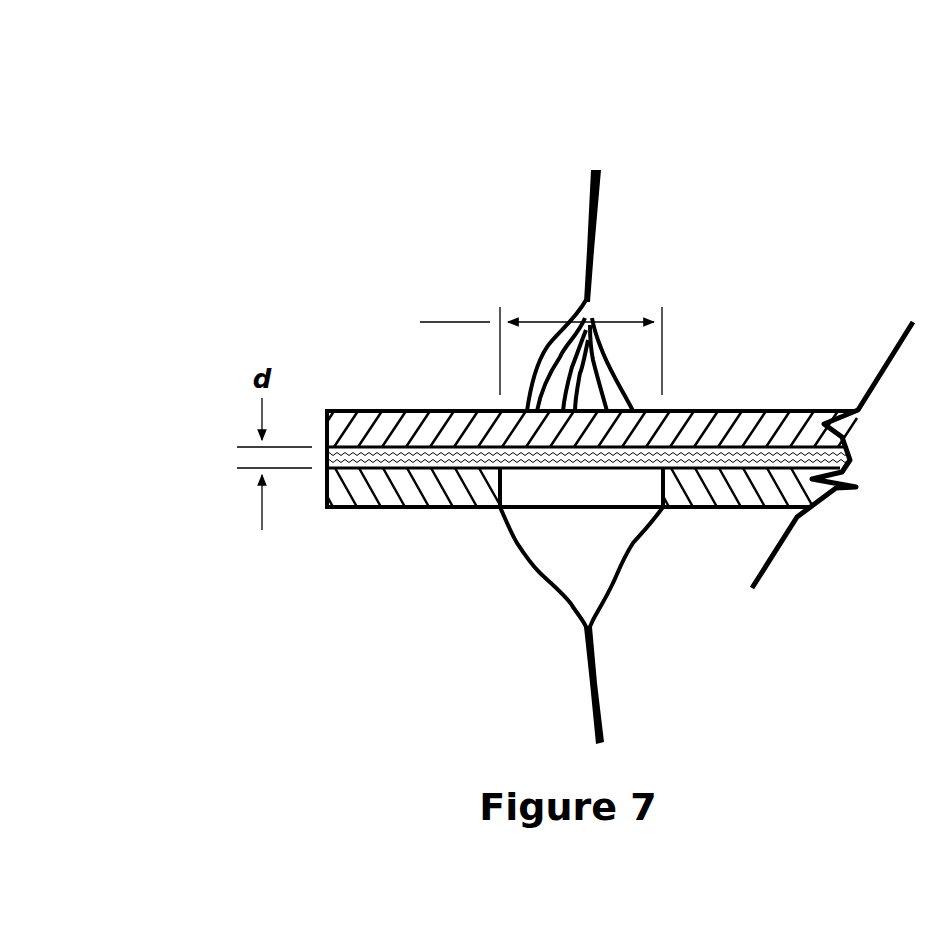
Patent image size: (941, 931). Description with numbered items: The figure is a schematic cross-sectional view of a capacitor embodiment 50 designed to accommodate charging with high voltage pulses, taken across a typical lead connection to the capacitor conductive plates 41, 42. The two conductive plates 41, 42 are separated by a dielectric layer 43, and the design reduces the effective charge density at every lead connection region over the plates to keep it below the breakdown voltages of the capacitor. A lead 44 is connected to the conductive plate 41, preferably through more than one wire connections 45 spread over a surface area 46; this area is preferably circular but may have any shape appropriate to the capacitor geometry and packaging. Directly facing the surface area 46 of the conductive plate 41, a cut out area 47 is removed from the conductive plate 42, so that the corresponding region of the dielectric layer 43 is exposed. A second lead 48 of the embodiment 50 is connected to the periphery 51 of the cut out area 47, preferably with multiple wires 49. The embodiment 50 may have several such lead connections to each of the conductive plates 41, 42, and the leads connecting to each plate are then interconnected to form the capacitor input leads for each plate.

The capacitor embodiment 50 is at (181, 164).
The lead 44 is at (571, 204).
The wire connections 45 is at (632, 370).
The surface area 46 is at (541, 338).
The dielectric layer 43 is at (762, 455).
The conductive plate 41 is at (800, 418).
The conductive plate 42 is at (388, 483).
The periphery of the cut out area 51 is at (497, 490).
The cut out area 47 is at (587, 493).
The wires 49 is at (603, 560).
The second lead 48 is at (569, 710).